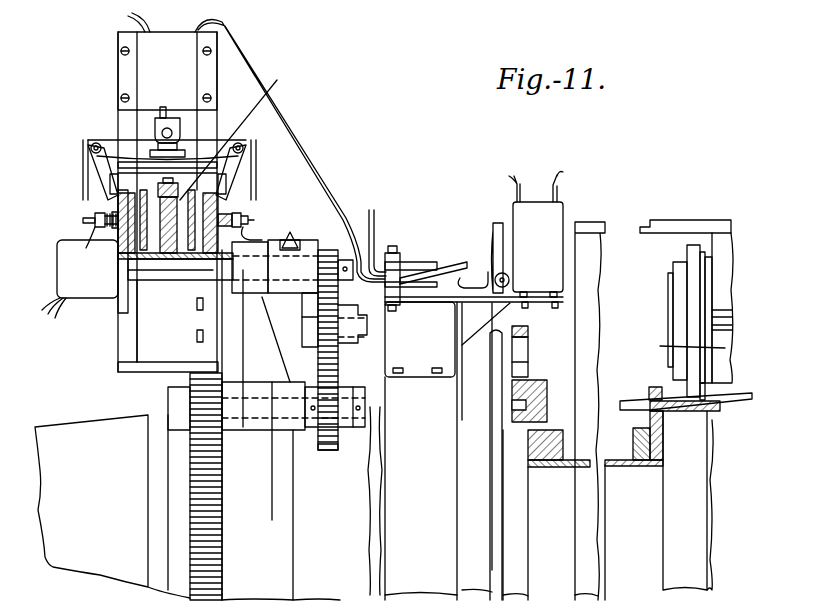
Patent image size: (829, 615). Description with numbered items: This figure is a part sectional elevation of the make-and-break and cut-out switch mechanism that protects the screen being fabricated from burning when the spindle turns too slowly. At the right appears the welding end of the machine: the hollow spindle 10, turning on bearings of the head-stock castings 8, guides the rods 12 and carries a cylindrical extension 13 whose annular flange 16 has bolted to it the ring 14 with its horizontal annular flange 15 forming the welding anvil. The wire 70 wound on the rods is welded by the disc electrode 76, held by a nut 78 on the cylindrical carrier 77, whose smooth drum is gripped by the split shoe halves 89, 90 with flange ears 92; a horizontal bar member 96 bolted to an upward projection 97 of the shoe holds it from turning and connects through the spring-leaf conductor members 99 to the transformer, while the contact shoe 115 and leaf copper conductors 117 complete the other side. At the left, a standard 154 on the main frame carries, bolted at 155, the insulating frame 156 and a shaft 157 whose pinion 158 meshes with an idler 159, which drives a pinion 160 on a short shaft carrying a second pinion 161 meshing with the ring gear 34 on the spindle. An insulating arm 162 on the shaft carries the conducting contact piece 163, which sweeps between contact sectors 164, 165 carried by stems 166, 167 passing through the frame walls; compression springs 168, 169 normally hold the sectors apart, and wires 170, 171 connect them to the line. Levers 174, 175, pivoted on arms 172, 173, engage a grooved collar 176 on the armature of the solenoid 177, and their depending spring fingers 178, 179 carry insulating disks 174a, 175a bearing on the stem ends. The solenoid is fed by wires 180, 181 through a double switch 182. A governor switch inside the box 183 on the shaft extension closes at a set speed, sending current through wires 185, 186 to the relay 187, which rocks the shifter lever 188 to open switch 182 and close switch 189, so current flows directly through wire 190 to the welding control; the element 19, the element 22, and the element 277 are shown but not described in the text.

The head-stock castings 8 is at (450, 505).
The cylindrical hollow spindle 10 is at (516, 425).
The rods 12 is at (750, 400).
The cylindrical extension 13 is at (603, 470).
The ring 14 is at (650, 424).
The annular flange 15 is at (710, 425).
The annular flange 16 is at (633, 441).
The key 19 is at (650, 388).
The bearing block 22 is at (553, 390).
The ring gear 34 is at (190, 496).
The wire 70 is at (705, 398).
The welding disc electrode 76 is at (695, 309).
The cylindrical carrier 77 is at (672, 326).
The nut 78 is at (680, 292).
The contact shoe half 89 is at (725, 292).
The contact shoe half 90 is at (679, 349).
The flange ears 92 is at (732, 327).
The horizontal bar member 96 is at (678, 222).
The upward projection 97 is at (727, 240).
The spring-leaf conductor members 99 is at (598, 278).
The contact shoe 115 is at (512, 436).
The leaf copper conductors 117 is at (530, 331).
The standard 154 is at (234, 432).
The bolt 155 is at (197, 334).
The frame 156 is at (120, 358).
The shaft 157 is at (198, 306).
The pinion 158 is at (338, 290).
The idler 159 is at (338, 361).
The pinion 160 is at (326, 450).
The second pinion 161 is at (200, 427).
The insulating arm 162 is at (178, 282).
The conducting contact piece 163 is at (180, 135).
The contact sector 164 is at (213, 195).
The contact sector 165 is at (100, 210).
The stem 166 is at (195, 205).
The stem 167 is at (118, 268).
The compression spring 168 is at (218, 222).
The compression spring 169 is at (115, 218).
The wire 170 is at (263, 229).
The wire 171 is at (92, 232).
The arm 172 is at (228, 176).
The arm 173 is at (97, 160).
The lever 174 is at (224, 142).
The insulating disk 174a is at (298, 238).
The lever 175 is at (113, 143).
The insulating disk 175a is at (110, 220).
The grooved collar 176 is at (244, 134).
The solenoid 177 is at (188, 68).
The spring finger 178 is at (178, 198).
The spring finger 179 is at (84, 178).
The wire 180 is at (298, 128).
The wire 181 is at (142, 25).
The double switch 182 is at (428, 287).
The box 183 is at (60, 282).
The wire 185 is at (512, 178).
The wire 186 is at (560, 176).
The relay 187 is at (550, 218).
The shifter lever 188 is at (497, 242).
The switch 189 is at (410, 262).
The wire 190 is at (376, 210).
The pin 277 is at (158, 114).